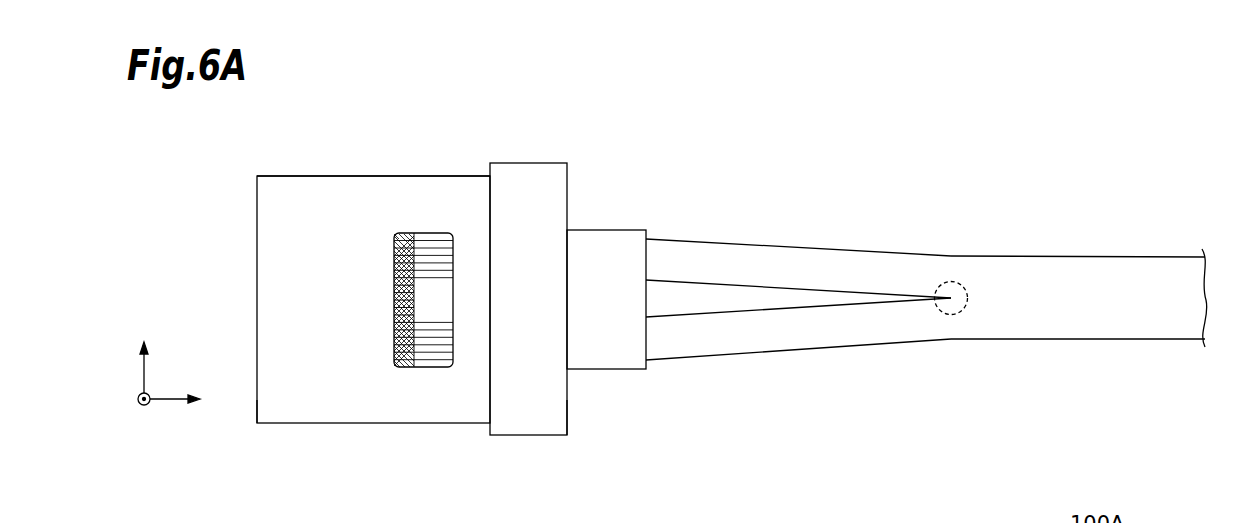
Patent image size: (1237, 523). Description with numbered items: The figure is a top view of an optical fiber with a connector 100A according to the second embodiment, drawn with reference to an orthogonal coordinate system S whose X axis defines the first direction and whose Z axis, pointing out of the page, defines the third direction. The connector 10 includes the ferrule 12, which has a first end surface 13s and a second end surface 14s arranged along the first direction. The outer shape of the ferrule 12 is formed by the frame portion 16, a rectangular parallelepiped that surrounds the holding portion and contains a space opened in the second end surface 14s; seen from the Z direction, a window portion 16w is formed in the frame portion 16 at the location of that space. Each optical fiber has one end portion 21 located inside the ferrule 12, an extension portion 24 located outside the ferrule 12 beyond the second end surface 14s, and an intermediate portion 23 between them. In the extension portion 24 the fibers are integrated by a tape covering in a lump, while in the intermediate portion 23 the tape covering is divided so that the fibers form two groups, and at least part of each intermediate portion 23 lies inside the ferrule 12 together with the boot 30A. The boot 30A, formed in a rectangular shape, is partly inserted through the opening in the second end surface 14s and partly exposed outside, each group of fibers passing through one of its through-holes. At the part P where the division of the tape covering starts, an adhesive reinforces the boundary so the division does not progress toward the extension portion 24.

The optical fiber with a connector 100A is at (1127, 121).
The connector 10 is at (528, 163).
The ferrule 12 is at (385, 176).
The first end surface 13s is at (257, 412).
The second end surface 14s is at (568, 412).
The frame portion 16 is at (346, 185).
The window portion 16w is at (453, 294).
The one end portion 21 is at (427, 284).
The intermediate portion 23 is at (767, 248).
The extension portion 24 is at (1118, 260).
The boot 30A is at (605, 238).
The part P is at (963, 281).
The orthogonal coordinate system S is at (140, 370).